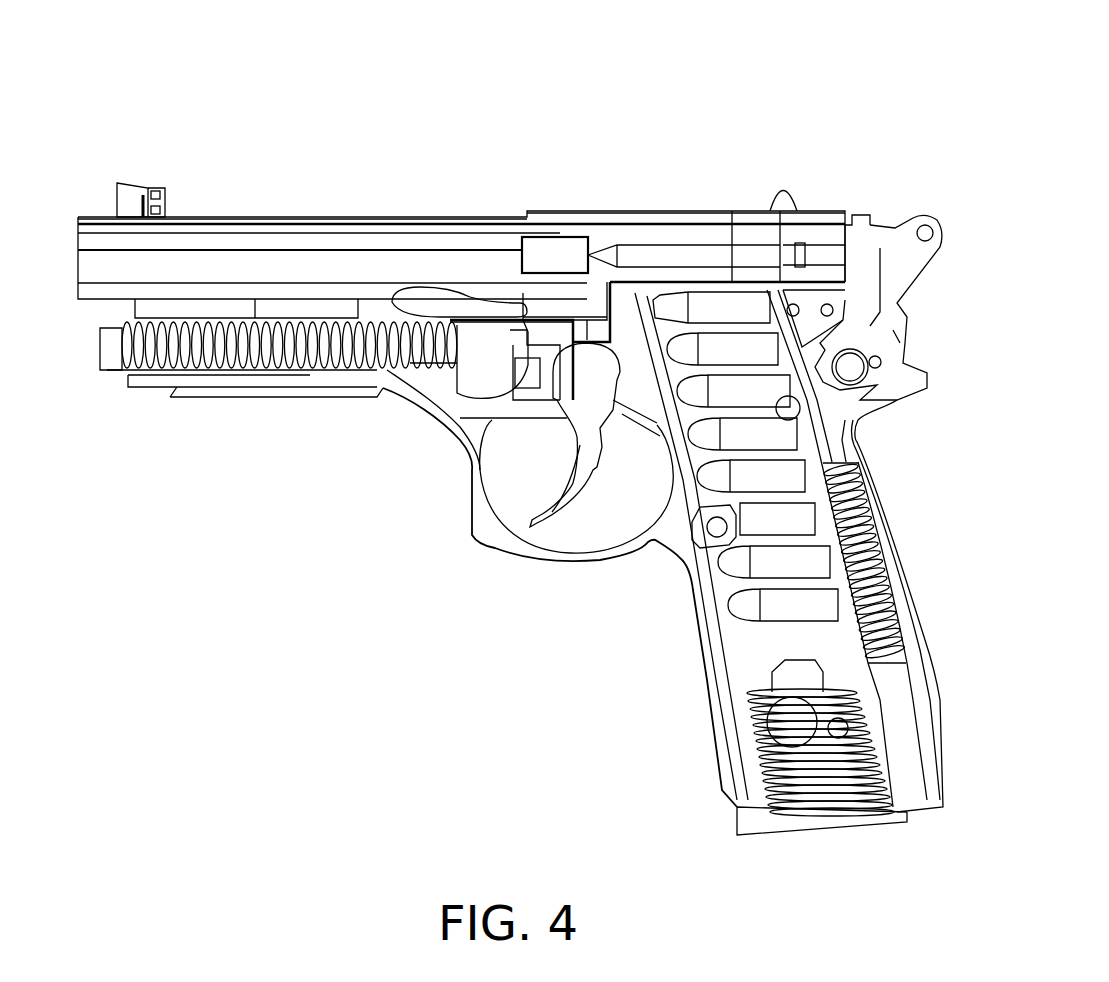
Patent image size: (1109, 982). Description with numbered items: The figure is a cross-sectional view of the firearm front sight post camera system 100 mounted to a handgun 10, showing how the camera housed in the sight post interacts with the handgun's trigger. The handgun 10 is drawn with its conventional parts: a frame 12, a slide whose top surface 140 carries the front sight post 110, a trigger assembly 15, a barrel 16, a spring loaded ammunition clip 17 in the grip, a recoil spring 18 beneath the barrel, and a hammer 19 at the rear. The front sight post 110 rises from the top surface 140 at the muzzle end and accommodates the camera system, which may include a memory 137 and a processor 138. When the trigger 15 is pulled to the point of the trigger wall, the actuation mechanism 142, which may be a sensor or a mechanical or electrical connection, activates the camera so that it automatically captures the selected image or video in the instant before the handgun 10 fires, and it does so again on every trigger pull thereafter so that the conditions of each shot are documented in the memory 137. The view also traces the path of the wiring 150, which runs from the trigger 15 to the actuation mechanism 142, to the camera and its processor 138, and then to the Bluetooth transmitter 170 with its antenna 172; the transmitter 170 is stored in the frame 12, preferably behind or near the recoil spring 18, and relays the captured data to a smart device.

The handgun 10 is at (771, 90).
The frame 12 is at (483, 442).
The trigger assembly 15 is at (537, 523).
The barrel 16 is at (87, 263).
The spring loaded ammunition clip 17 is at (817, 807).
The recoil spring 18 is at (185, 367).
The hammer 19 is at (930, 218).
The firearm front sight post camera system 100 is at (128, 135).
The front sight post 110 is at (131, 178).
The memory 137 is at (157, 190).
The processor 138 is at (165, 207).
The top surface 140 is at (268, 218).
The actuation mechanism 142 is at (485, 325).
The wiring 150 is at (600, 218).
The Bluetooth transmitter 170 is at (523, 376).
The antenna 172 is at (520, 360).